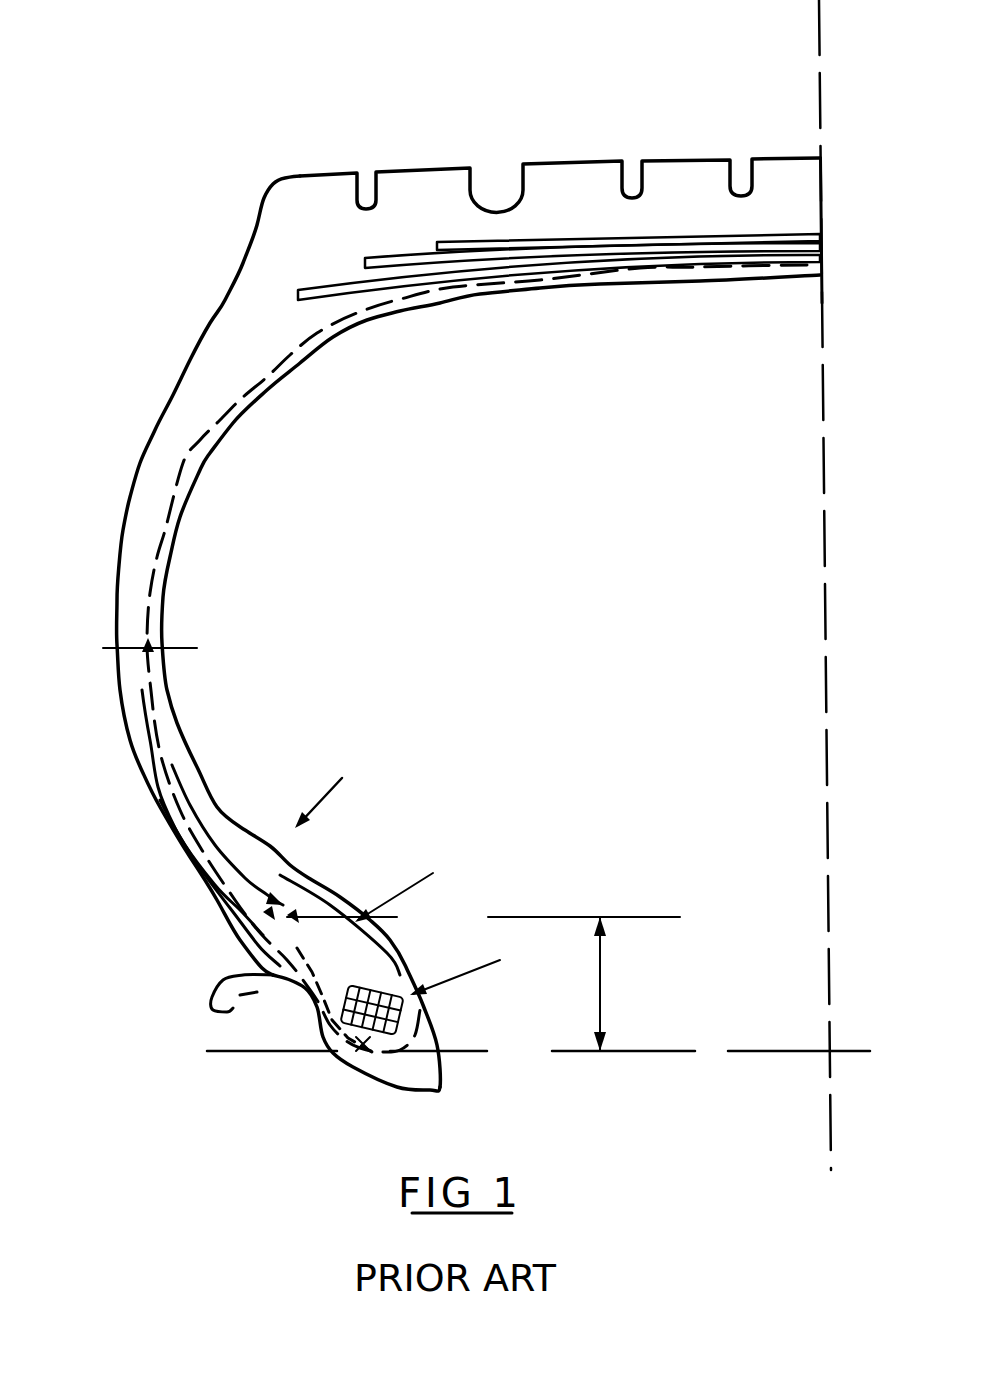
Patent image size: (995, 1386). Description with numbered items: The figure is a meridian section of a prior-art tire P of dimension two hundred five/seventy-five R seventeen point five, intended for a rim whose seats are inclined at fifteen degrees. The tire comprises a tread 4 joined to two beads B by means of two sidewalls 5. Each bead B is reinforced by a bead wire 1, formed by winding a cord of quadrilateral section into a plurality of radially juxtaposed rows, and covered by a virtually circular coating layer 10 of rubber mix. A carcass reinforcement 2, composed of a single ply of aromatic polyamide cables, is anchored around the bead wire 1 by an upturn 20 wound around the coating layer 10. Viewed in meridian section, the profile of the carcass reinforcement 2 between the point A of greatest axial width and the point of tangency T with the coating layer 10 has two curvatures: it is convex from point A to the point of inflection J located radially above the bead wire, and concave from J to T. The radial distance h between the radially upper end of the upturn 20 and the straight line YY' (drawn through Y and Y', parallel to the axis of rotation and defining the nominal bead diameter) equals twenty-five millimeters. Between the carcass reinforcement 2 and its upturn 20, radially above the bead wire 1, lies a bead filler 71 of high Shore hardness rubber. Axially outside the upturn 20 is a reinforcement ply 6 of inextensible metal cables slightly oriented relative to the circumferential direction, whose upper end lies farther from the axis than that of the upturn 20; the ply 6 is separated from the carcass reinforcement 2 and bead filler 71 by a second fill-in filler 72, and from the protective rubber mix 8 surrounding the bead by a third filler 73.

The bead wire 1 is at (377, 990).
The carcass reinforcement 2 is at (197, 441).
The tread 4 is at (425, 183).
The sidewall 5 is at (175, 398).
The reinforcement ply 6 is at (280, 930).
The protective rubber mix 8 is at (190, 860).
The coating layer 10 is at (367, 1040).
The upturn 20 is at (287, 967).
The bead filler 71 is at (327, 930).
The second fill-in filler 72 is at (227, 807).
The third filler 73 is at (157, 787).
The point of greatest axial width A is at (160, 620).
The bead B is at (331, 782).
The point of inflection J is at (396, 877).
The point of tangency T is at (471, 960).
The tire P is at (403, 420).
The radial distance h is at (483, 984).
The straight line YY' Y is at (536, 1076).
The straight line YY' Y' is at (848, 585).